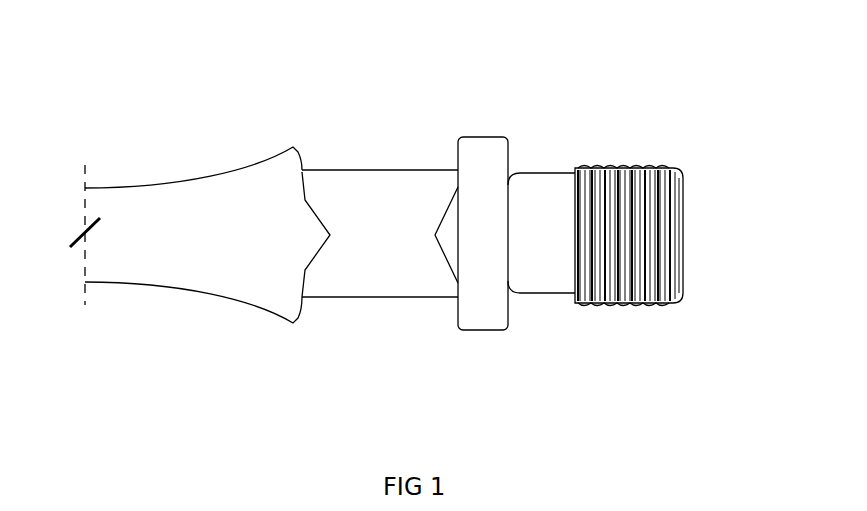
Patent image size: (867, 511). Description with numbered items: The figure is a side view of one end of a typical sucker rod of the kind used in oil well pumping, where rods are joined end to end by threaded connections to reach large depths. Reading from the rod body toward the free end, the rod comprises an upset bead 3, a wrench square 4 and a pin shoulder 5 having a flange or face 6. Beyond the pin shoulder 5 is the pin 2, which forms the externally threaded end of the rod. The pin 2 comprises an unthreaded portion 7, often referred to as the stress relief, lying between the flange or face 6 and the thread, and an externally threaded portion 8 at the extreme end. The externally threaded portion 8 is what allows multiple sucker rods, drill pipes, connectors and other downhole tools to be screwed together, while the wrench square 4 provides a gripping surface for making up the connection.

The pin 2 is at (600, 340).
The upset bead 3 is at (293, 147).
The wrench square 4 is at (400, 168).
The pin shoulder 5 is at (487, 137).
The flange or face 6 is at (510, 147).
The unthreaded portion 7 is at (543, 175).
The externally threaded portion 8 is at (647, 170).